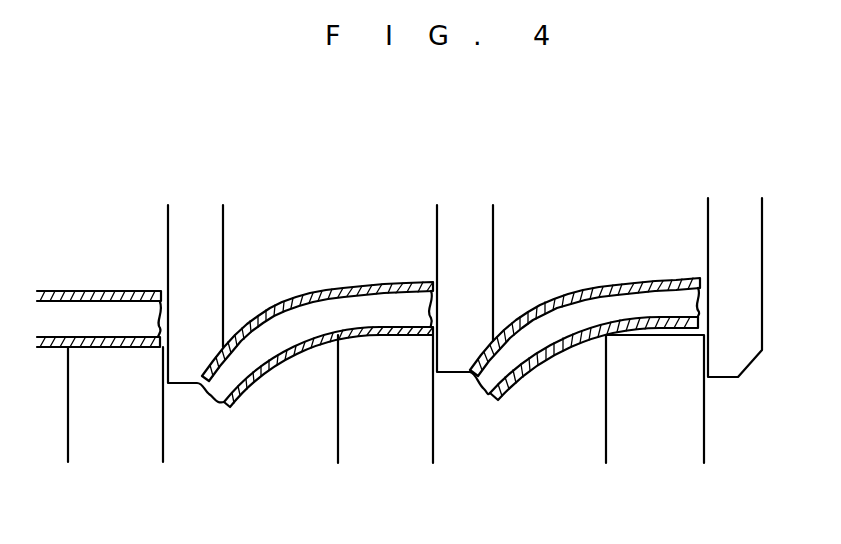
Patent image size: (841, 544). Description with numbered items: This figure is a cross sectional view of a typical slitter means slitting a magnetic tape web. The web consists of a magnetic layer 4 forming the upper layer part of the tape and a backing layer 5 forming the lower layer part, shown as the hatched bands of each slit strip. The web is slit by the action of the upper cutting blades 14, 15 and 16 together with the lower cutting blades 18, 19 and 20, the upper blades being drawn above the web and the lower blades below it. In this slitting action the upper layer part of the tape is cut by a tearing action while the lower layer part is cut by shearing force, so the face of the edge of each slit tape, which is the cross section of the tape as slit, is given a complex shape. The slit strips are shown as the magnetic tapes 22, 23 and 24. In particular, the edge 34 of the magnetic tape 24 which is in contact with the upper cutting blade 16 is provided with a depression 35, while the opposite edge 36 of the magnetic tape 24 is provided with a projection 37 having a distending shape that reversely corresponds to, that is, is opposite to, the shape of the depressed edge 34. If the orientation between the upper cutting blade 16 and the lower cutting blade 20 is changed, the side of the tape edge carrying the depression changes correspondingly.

The magnetic layer 4 is at (123, 290).
The backing layer 5 is at (53, 348).
The upper cutting blade 14 is at (205, 247).
The upper cutting blade 15 is at (482, 242).
The upper cutting blade 16 is at (750, 265).
The lower cutting blade 18 is at (147, 428).
The lower cutting blade 19 is at (420, 415).
The lower cutting blade 20 is at (692, 442).
The magnetic tape 22 is at (73, 318).
The magnetic tape 23 is at (333, 313).
The magnetic tape 24 is at (600, 312).
The edge of the magnetic tape 34 is at (666, 230).
The depression 35 is at (687, 330).
The opposite edge of the magnetic tape 36 is at (503, 360).
The projection 37 is at (488, 387).